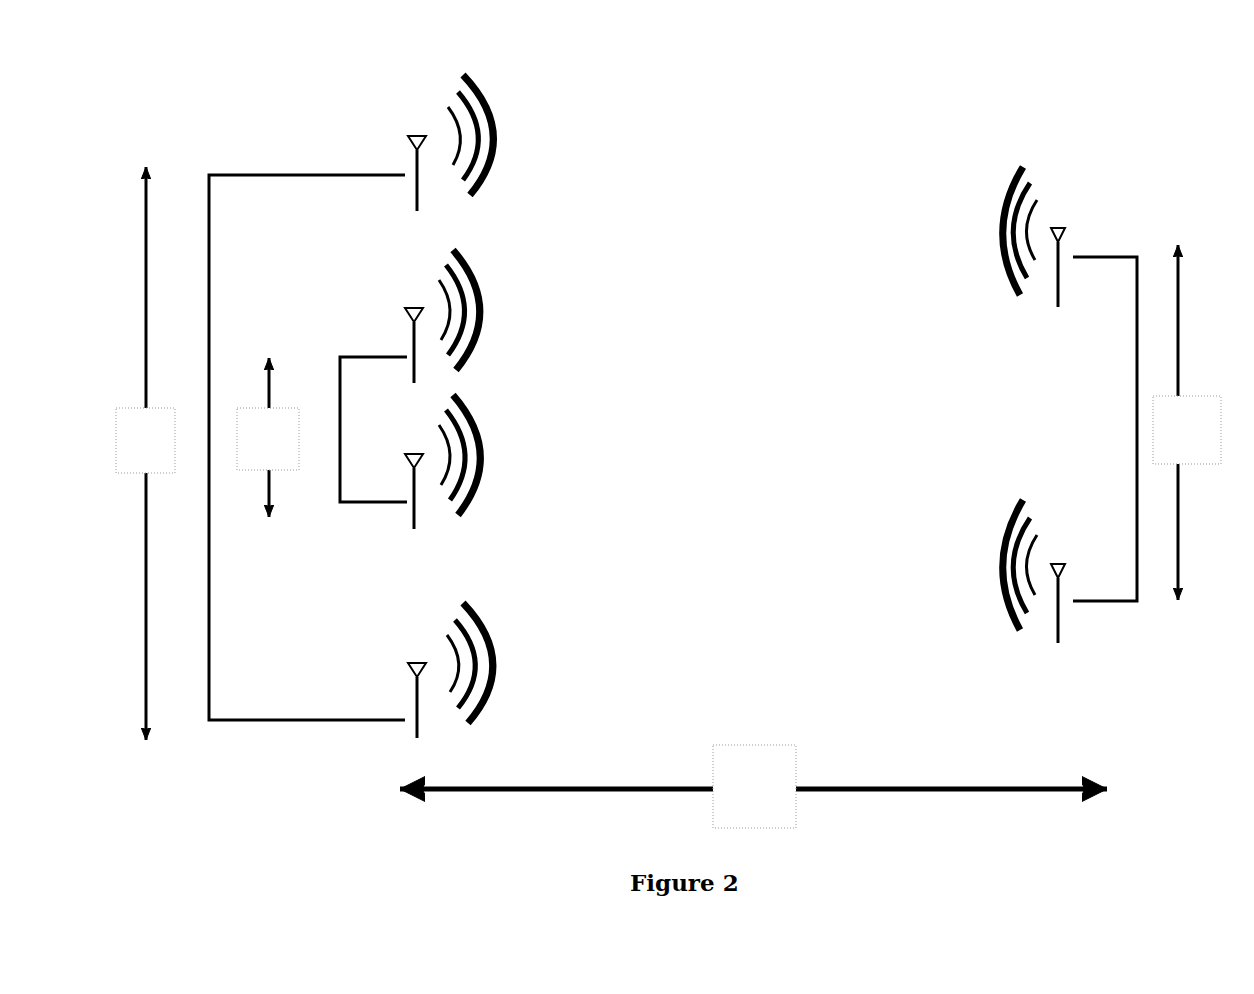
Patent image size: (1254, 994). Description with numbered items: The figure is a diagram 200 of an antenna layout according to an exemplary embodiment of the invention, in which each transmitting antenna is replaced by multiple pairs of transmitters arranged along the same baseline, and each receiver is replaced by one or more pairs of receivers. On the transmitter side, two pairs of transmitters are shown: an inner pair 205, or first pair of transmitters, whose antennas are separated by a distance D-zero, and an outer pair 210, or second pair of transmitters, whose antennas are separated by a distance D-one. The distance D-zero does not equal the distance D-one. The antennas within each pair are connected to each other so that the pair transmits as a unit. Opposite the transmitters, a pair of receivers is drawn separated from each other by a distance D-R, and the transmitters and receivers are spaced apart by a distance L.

The diagram of the antenna layout 200 is at (228, 80).
The inner pair of transmitters 205 is at (484, 343).
The outer pair of transmitters 210 is at (494, 169).